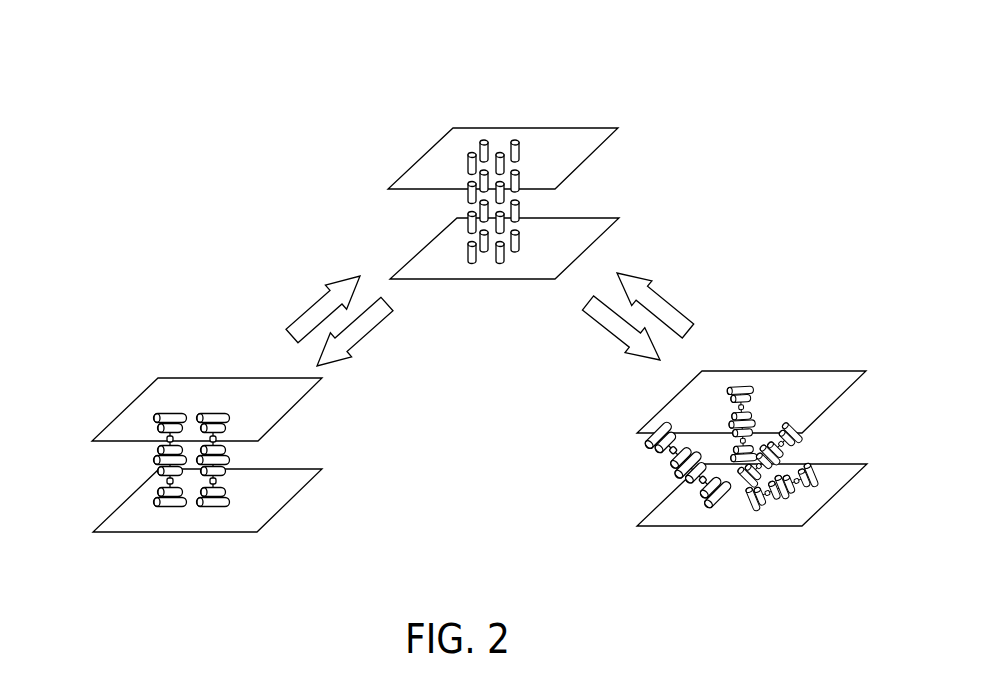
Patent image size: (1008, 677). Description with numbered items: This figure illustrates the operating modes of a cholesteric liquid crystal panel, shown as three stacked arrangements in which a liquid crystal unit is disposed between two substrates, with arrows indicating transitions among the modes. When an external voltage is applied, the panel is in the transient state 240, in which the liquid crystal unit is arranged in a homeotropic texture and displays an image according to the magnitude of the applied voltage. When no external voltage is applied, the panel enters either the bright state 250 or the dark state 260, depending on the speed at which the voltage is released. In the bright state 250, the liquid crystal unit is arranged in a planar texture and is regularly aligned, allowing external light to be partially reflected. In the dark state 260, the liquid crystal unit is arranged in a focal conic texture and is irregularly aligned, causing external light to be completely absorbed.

The transient state 240 is at (618, 95).
The bright state 250 is at (128, 382).
The dark state 260 is at (815, 345).